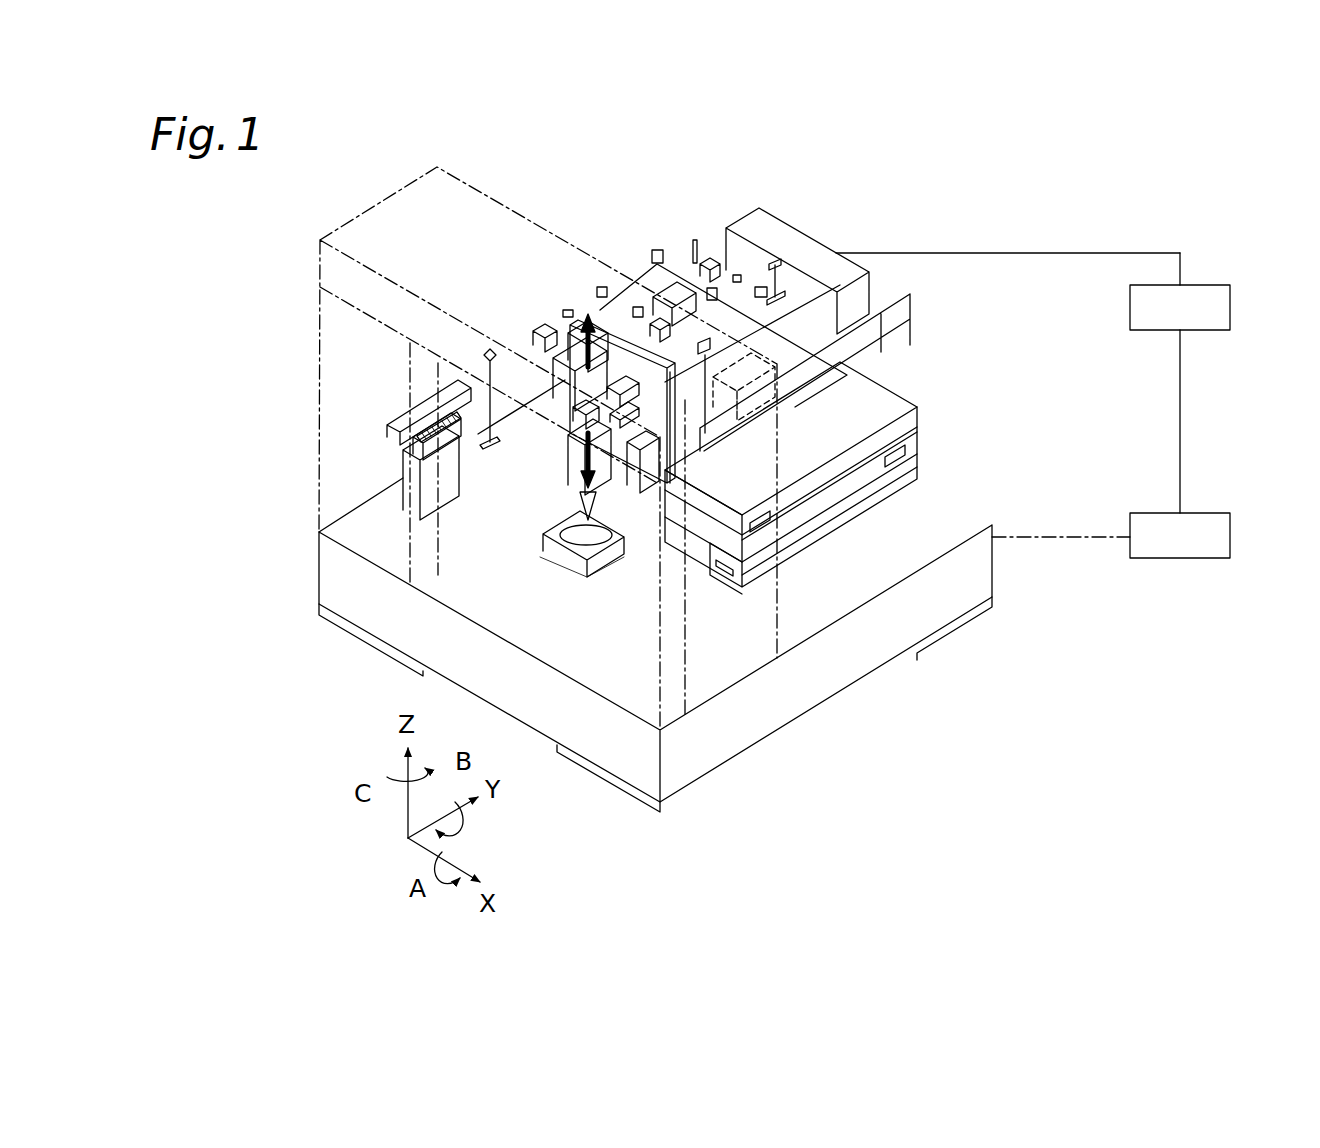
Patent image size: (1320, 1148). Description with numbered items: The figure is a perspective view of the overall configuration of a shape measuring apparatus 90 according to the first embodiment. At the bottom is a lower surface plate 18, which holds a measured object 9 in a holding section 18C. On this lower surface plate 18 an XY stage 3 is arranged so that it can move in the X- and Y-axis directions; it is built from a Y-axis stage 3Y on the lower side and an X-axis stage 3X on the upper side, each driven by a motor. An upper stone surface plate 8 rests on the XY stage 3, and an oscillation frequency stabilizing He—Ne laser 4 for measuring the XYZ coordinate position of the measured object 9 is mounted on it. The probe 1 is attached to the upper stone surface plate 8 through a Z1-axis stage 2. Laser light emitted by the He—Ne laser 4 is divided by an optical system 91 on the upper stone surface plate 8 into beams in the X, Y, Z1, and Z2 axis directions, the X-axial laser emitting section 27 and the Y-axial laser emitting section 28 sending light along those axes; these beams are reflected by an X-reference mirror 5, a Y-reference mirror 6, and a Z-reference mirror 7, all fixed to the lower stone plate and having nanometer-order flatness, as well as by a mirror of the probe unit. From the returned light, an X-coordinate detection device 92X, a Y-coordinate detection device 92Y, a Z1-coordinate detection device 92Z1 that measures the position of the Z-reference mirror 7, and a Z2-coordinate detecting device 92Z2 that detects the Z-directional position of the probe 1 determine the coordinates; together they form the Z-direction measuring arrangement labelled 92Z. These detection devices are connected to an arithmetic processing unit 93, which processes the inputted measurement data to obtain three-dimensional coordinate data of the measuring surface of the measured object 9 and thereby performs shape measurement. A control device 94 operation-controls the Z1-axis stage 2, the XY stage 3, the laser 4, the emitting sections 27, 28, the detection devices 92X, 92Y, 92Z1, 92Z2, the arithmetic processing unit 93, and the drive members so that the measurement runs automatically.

The probe 1 is at (602, 465).
The Z1-axis stage 2 is at (612, 452).
The XY stage 3 is at (877, 410).
The X-axis stage 3X is at (918, 423).
The Y-axis stage 3Y is at (910, 444).
The oscillation frequency stabilizing He—Ne laser 4 is at (827, 243).
The X-reference mirror 5 is at (457, 378).
The Y-reference mirror 6 is at (733, 387).
The Z-reference mirror 7 is at (620, 322).
The upper stone surface plate 8 is at (870, 337).
The measured object 9 is at (540, 543).
The lower surface plate 18 is at (837, 673).
The holding section 18C is at (592, 567).
The X-axial laser emitting section 27 is at (470, 458).
The Y-axial laser emitting section 28 is at (690, 464).
The shape measuring apparatus 90 is at (833, 202).
The optical system 91 is at (630, 250).
The X-coordinate detection device 92X is at (380, 400).
The Y-coordinate detection device 92Y is at (822, 410).
The Z-axis drive 92Z is at (624, 330).
The Z1-coordinate detection device 92Z1 is at (573, 397).
The Z2-coordinate detecting device 92Z2 is at (567, 377).
The arithmetic processing unit 93 is at (1210, 512).
The control device 94 is at (1210, 283).